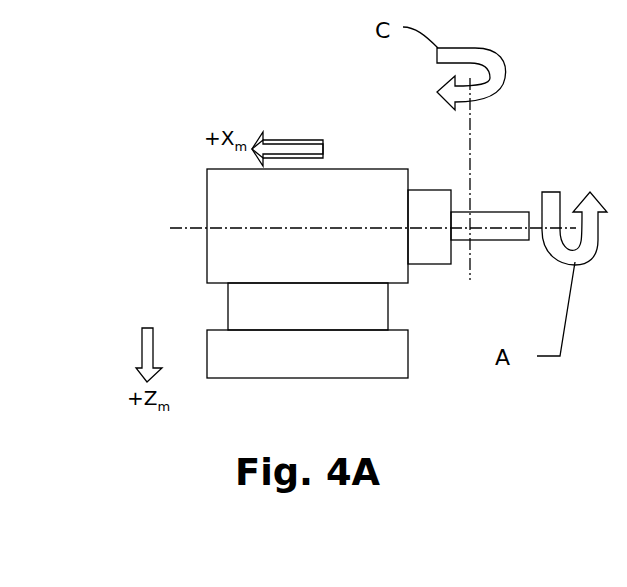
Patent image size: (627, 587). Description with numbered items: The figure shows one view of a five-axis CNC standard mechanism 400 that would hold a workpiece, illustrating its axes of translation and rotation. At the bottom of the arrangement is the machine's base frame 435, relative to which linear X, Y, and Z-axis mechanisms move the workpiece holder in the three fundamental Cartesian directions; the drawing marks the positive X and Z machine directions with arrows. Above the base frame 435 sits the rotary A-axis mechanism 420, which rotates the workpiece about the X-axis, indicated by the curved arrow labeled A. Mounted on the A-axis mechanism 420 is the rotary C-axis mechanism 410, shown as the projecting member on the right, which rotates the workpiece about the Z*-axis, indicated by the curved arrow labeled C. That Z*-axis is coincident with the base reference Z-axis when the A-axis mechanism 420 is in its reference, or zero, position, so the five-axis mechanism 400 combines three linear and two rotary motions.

The 5-axis CNC standard mechanism 400 is at (128, 142).
The rotary C-axis mechanism 410 is at (458, 314).
The rotary A-axis mechanism 420 is at (358, 155).
The base frame 435 is at (330, 366).